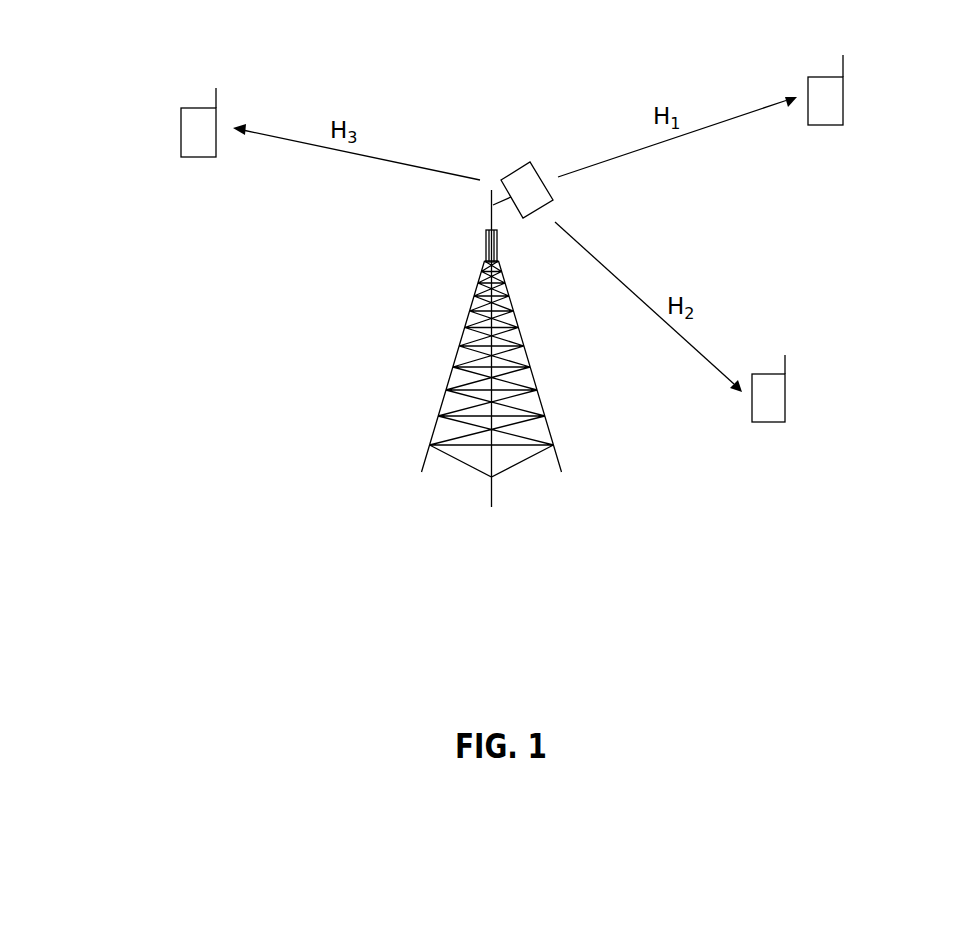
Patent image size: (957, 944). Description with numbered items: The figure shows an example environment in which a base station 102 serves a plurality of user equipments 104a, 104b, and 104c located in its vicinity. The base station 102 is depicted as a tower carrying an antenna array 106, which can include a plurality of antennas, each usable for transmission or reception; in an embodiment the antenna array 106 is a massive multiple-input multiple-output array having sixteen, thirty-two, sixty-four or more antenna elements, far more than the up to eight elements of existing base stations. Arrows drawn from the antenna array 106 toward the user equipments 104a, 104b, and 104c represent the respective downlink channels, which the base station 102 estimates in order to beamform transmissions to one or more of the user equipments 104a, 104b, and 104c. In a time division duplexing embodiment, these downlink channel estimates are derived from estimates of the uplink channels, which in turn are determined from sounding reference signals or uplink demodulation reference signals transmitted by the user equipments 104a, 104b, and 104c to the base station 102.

The base station 102 is at (470, 335).
The user equipment 104a is at (843, 98).
The user equipment 104b is at (787, 397).
The user equipment 104c is at (181, 130).
The antenna array 106 is at (507, 172).